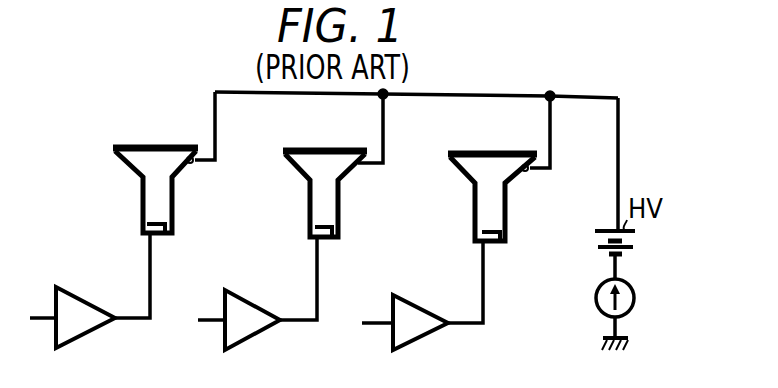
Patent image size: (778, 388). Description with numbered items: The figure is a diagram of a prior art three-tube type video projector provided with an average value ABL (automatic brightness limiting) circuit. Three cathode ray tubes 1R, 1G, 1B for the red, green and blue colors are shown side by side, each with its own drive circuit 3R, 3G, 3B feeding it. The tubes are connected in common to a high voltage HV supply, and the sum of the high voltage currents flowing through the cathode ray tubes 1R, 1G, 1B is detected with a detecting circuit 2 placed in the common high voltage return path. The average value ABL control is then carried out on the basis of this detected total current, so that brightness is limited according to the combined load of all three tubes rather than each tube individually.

The cathode ray tube for red 1R is at (172, 206).
The cathode ray tube for green 1G is at (338, 210).
The cathode ray tube for blue 1B is at (505, 212).
The drive circuit 3R is at (92, 335).
The drive circuit 3G is at (258, 337).
The drive circuit 3B is at (428, 338).
The detecting circuit 2 is at (597, 292).